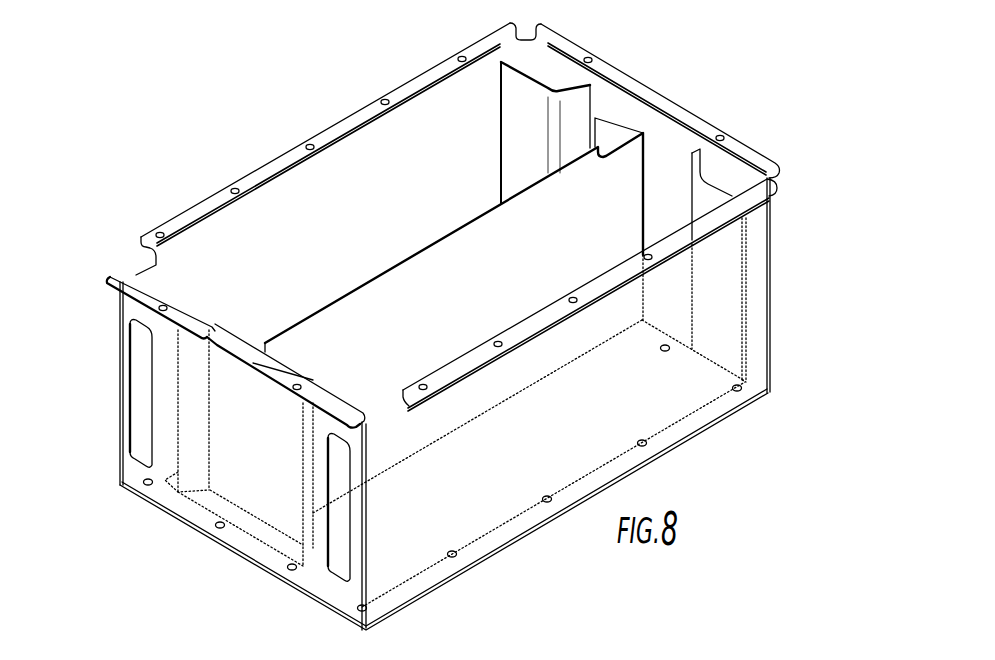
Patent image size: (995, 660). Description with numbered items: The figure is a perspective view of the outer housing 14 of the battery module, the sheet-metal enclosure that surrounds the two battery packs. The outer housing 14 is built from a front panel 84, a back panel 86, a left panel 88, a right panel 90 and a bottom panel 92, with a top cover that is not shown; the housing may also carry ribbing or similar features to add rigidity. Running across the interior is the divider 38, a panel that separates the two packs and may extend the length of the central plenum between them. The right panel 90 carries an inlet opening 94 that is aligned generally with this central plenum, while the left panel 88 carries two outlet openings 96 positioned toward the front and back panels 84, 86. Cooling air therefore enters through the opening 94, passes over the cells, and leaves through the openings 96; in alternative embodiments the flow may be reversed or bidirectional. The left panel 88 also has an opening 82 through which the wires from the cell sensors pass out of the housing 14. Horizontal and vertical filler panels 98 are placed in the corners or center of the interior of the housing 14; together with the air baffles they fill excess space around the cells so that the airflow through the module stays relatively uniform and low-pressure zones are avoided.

The outer housing 14 is at (781, 277).
The divider 38 is at (618, 180).
The opening 82 is at (228, 362).
The front panel 84 is at (498, 498).
The back panel 86 is at (343, 177).
The left panel 88 is at (132, 310).
The right panel 90 is at (757, 160).
The bottom panel 92 is at (678, 430).
The inlet opening 94 is at (665, 193).
The outlet openings 96 is at (143, 420).
The filler panels 98 is at (522, 100).